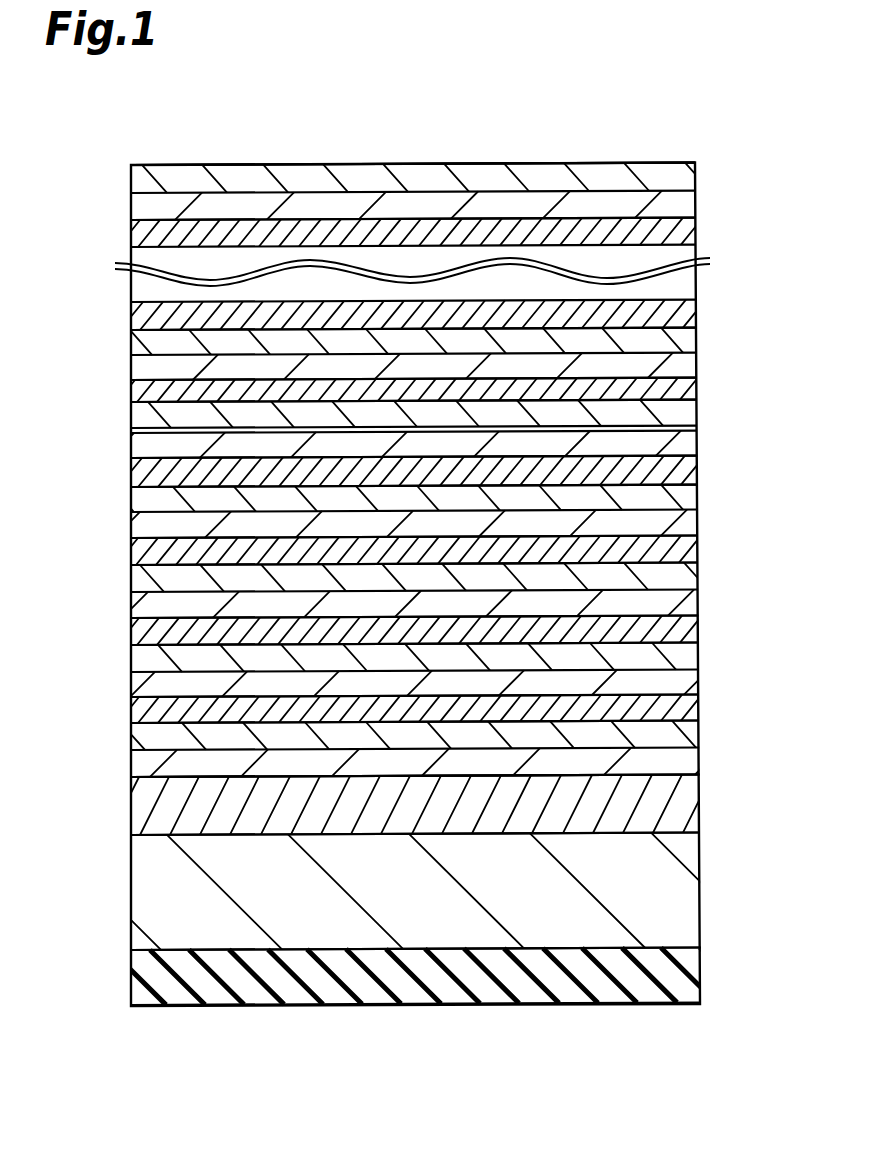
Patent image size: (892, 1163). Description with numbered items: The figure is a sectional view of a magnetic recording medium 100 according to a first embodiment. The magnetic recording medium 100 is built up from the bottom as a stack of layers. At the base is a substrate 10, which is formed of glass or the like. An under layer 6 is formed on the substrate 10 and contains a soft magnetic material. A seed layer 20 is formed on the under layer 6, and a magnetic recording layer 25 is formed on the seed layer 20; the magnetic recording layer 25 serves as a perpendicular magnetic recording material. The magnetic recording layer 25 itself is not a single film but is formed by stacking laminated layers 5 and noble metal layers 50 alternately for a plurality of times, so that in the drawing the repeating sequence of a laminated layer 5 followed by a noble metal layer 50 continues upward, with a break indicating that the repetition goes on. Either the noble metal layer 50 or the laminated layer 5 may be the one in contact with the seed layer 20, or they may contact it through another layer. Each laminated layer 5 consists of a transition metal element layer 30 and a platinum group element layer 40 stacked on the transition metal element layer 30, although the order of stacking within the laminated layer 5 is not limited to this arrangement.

The magnetic recording medium 100 is at (679, 115).
The substrate 10 is at (158, 984).
The under layer 6 is at (152, 880).
The seed layer 20 is at (150, 804).
The magnetic recording layer 25 is at (476, 469).
The laminated layer 5 is at (757, 170).
The platinum group element layer 40 is at (684, 177).
The transition metal element layer 30 is at (684, 204).
The noble metal layer 50 is at (684, 232).